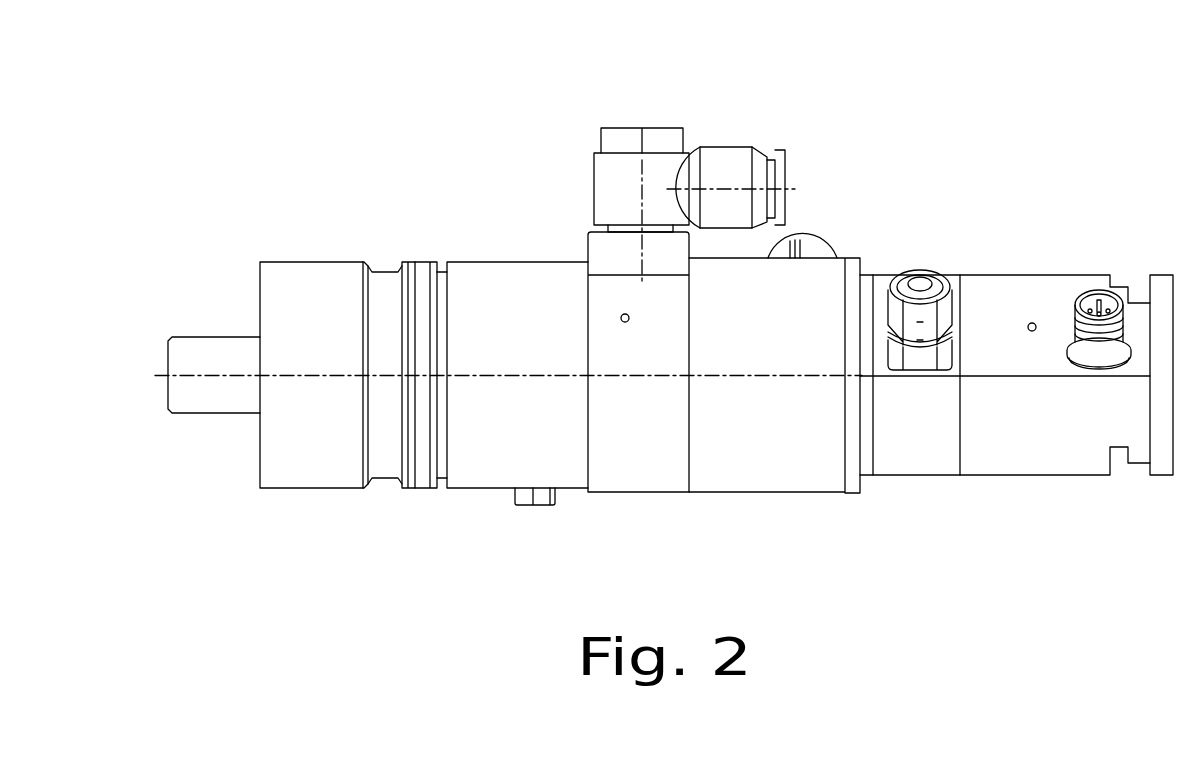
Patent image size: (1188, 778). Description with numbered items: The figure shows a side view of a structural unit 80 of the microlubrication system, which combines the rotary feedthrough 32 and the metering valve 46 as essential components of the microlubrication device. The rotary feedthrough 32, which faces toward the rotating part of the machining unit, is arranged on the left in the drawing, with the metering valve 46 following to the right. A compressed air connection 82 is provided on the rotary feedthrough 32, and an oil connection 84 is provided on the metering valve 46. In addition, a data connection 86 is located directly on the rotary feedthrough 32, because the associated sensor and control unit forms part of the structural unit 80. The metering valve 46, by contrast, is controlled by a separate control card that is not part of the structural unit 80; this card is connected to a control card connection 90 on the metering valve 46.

The structural unit 80 is at (352, 160).
The compressed air connection 82 is at (718, 160).
The data connection 86 is at (812, 247).
The oil connection 84 is at (925, 282).
The control card connection 90 is at (1093, 297).
The rotary feedthrough 32 is at (490, 462).
The metering valve 46 is at (988, 466).